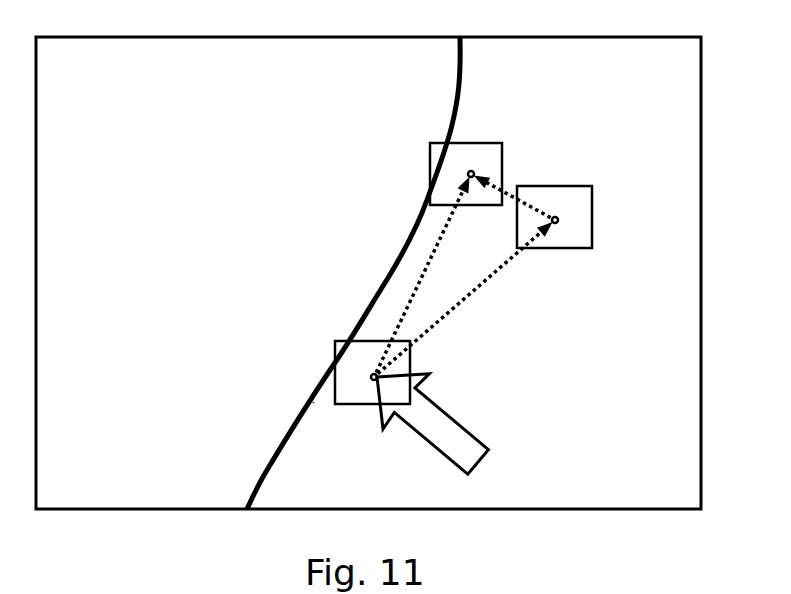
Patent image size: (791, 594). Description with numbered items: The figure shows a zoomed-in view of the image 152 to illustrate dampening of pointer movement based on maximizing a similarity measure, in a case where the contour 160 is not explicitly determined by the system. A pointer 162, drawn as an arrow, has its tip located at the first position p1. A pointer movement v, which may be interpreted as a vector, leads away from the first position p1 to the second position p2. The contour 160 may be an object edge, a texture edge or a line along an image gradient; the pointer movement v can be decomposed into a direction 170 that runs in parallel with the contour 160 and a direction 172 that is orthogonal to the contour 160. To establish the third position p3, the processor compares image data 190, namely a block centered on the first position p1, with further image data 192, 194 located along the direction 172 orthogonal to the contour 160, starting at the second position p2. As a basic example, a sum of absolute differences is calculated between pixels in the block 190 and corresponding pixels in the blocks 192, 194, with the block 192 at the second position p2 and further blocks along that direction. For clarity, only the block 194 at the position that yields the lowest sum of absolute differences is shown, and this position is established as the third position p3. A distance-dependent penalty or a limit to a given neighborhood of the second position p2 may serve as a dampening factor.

The image 152 is at (608, 509).
The contour 160 is at (313, 402).
The pointer 162 is at (458, 416).
The direction following the contour 170 is at (421, 257).
The direction orthogonal to the contour 172 is at (512, 202).
The image data block 190 is at (410, 360).
The further image data block 192 is at (592, 207).
The further image data block 194 is at (485, 138).
The first position p1 is at (370, 387).
The second position p2 is at (565, 223).
The third position p3 is at (480, 170).
The pointer movement v is at (493, 282).